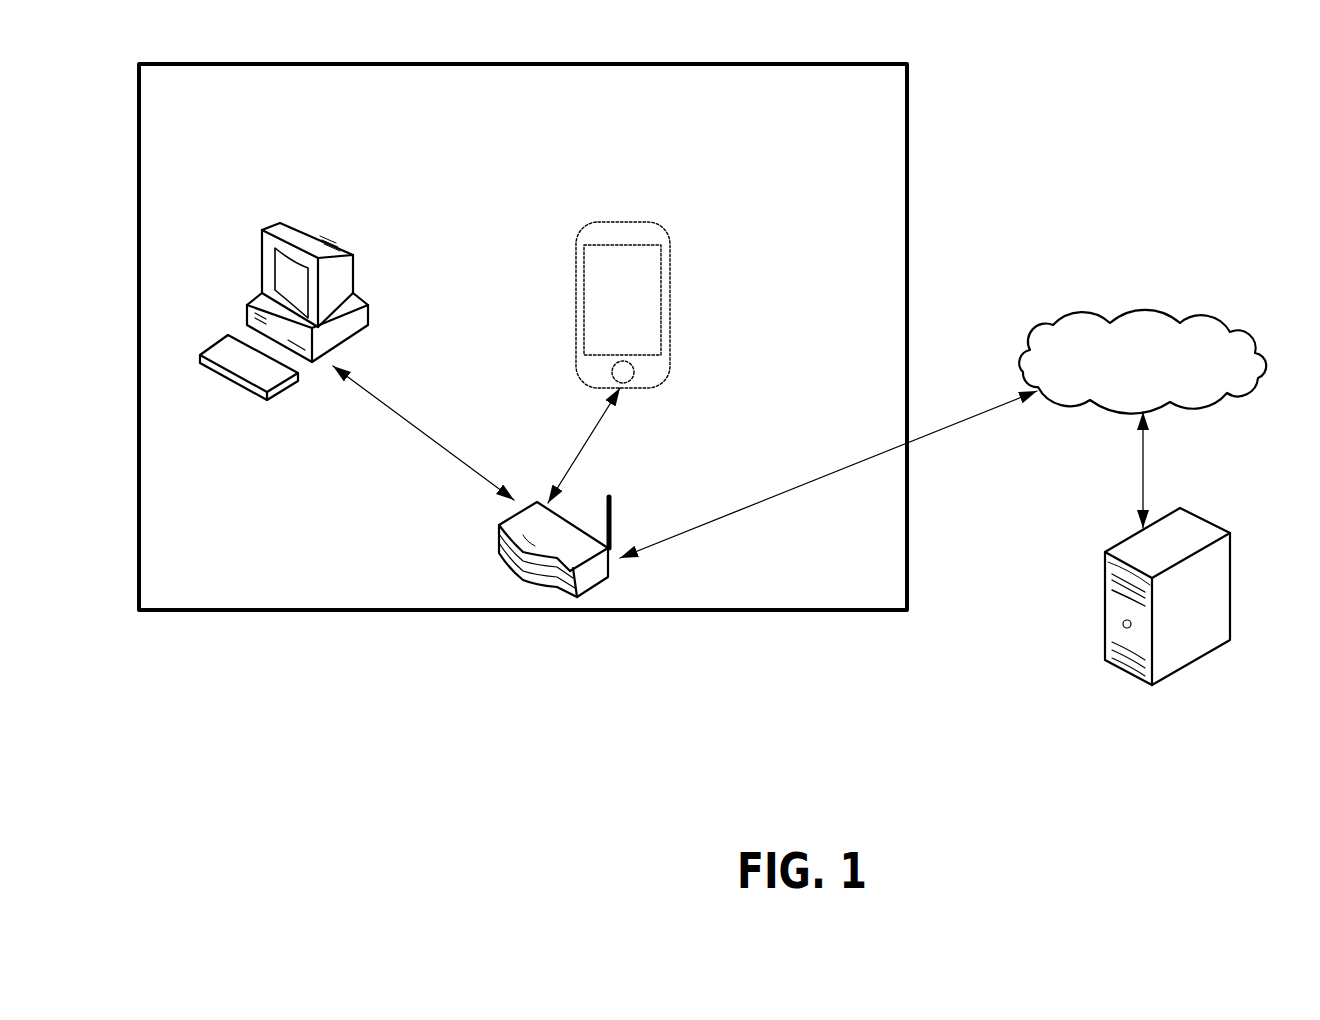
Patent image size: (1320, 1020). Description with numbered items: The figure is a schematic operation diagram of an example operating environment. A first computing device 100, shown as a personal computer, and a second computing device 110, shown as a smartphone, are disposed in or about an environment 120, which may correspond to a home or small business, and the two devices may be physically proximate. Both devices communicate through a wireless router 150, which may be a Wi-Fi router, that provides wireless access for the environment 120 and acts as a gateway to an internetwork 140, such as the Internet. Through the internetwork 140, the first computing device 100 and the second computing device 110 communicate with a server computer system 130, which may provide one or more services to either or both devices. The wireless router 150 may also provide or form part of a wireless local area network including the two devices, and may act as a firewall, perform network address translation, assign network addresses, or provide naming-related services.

The first computing device 100 is at (357, 236).
The second computing device 110 is at (674, 212).
The environment 120 is at (888, 98).
The server computer system 130 is at (1217, 509).
The internetwork 140 is at (1164, 373).
The wireless router 150 is at (523, 533).